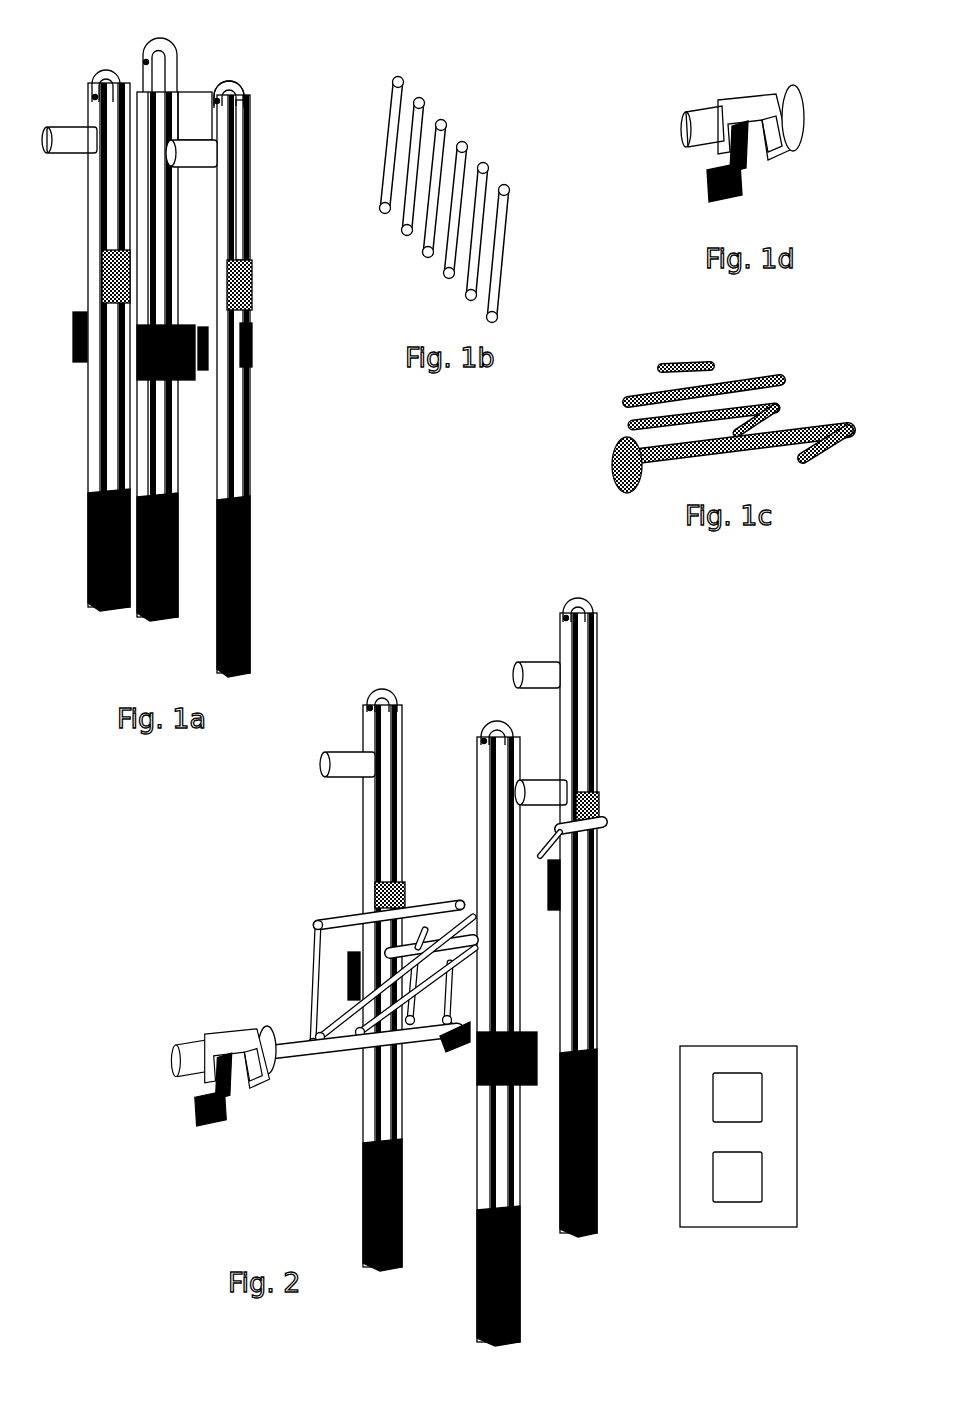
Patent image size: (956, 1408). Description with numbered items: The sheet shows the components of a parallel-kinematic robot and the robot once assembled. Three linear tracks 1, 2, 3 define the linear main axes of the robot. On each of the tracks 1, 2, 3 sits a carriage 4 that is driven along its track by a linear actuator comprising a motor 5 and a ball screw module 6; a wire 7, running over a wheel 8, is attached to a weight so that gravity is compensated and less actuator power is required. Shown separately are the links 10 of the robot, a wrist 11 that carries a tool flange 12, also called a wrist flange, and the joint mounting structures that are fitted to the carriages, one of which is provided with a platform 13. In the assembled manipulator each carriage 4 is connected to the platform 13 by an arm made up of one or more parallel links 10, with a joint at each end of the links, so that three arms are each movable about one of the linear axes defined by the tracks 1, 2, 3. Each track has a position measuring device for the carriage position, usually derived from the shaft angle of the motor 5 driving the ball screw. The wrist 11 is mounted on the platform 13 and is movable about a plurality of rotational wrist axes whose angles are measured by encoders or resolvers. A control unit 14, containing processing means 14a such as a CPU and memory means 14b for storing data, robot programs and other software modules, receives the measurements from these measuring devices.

In FIG. 1A, the linear track 1 is at (88, 535).
In FIG. 2, the linear track 1 is at (363, 830).
In FIG. 1A, the linear track 2 is at (172, 616).
In FIG. 2, the linear track 2 is at (477, 815).
In FIG. 1A, the linear track 3 is at (250, 568).
In FIG. 2, the linear track 3 is at (556, 730).
In FIG. 1A, the carriage 4 is at (246, 280).
In FIG. 2, the carriage 4 is at (405, 905).
In FIG. 1A, the motor 5 is at (70, 128).
In FIG. 1A, the ball screw module 6 is at (238, 400).
In FIG. 1A, the wire 7 is at (246, 190).
In FIG. 1A, the wheel 8 is at (226, 88).
In FIG. 1B, the links 10 is at (505, 192).
In FIG. 2, the links 10 is at (345, 1008).
In FIG. 1D, the wrist 11 is at (762, 82).
In FIG. 2, the wrist 11 is at (236, 1038).
In FIG. 1D, the tool flange 12 is at (712, 194).
In FIG. 2, the tool flange 12 is at (202, 1125).
In FIG. 1C, the platform 13 is at (612, 478).
In FIG. 2, the platform 13 is at (265, 1078).
In FIG. 2, the control unit 14 is at (706, 1046).
In FIG. 2, the processing means 14a is at (742, 1085).
In FIG. 2, the memory means 14b is at (742, 1183).